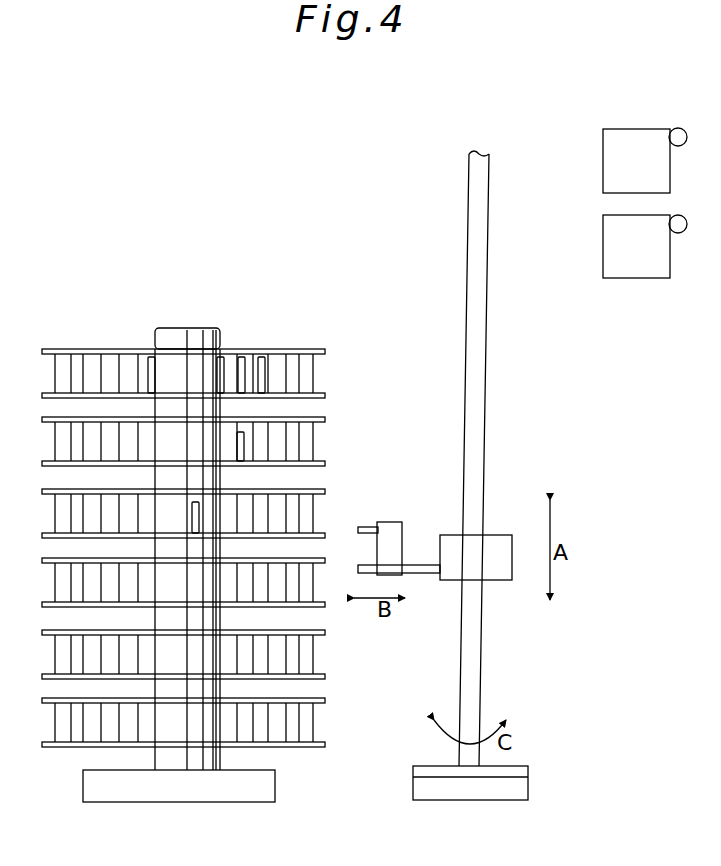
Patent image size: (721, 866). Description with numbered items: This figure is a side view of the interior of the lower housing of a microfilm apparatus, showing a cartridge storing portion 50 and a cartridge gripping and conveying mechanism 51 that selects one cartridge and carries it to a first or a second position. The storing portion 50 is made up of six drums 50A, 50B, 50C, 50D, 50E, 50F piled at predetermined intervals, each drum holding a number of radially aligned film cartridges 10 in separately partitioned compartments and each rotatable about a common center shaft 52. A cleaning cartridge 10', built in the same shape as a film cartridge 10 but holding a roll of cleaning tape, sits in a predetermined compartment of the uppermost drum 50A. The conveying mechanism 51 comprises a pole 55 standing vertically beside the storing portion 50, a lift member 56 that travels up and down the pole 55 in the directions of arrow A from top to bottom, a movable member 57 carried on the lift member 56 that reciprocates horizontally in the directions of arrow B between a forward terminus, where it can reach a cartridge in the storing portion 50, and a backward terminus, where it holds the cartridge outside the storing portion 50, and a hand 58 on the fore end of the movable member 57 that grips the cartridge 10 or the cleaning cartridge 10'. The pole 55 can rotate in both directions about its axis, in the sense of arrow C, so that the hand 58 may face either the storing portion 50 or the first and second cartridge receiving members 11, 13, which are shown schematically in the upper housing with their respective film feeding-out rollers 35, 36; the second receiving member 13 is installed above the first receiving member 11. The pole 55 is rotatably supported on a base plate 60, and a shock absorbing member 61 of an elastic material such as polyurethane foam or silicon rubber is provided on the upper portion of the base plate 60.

The cartridge 10 is at (274, 421).
The cleaning cartridge 10' is at (134, 351).
The first cartridge receiving member 11 is at (615, 268).
The second cartridge receiving member 13 is at (620, 150).
The film feeding-out roller 35 is at (676, 234).
The film feeding-out roller 36 is at (676, 128).
The cartridge storing portion 50 is at (328, 360).
The drum 50A is at (327, 382).
The drum 50B is at (323, 448).
The drum 50C is at (318, 513).
The drum 50D is at (320, 582).
The drum 50E is at (320, 652).
The drum 50F is at (320, 718).
The cartridge gripping and conveying mechanism 51 is at (448, 549).
The center shaft 52 is at (222, 760).
The pole 55 is at (476, 320).
The lift member 56 is at (505, 580).
The movable member 57 is at (388, 522).
The hand 58 is at (357, 574).
The base plate 60 is at (510, 793).
The shock absorbing member 61 is at (518, 771).